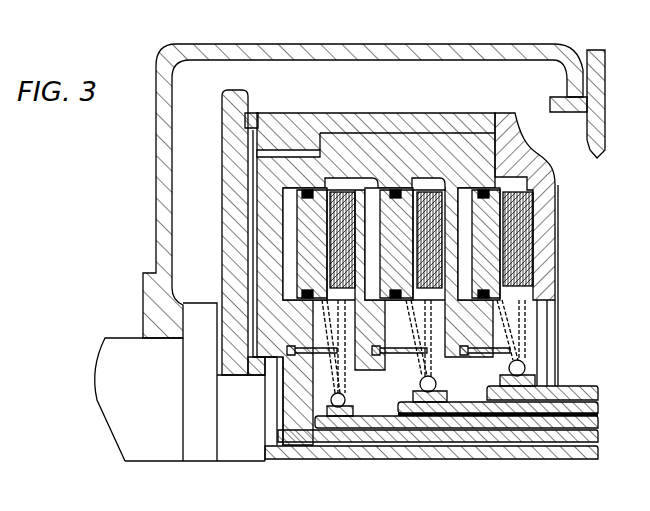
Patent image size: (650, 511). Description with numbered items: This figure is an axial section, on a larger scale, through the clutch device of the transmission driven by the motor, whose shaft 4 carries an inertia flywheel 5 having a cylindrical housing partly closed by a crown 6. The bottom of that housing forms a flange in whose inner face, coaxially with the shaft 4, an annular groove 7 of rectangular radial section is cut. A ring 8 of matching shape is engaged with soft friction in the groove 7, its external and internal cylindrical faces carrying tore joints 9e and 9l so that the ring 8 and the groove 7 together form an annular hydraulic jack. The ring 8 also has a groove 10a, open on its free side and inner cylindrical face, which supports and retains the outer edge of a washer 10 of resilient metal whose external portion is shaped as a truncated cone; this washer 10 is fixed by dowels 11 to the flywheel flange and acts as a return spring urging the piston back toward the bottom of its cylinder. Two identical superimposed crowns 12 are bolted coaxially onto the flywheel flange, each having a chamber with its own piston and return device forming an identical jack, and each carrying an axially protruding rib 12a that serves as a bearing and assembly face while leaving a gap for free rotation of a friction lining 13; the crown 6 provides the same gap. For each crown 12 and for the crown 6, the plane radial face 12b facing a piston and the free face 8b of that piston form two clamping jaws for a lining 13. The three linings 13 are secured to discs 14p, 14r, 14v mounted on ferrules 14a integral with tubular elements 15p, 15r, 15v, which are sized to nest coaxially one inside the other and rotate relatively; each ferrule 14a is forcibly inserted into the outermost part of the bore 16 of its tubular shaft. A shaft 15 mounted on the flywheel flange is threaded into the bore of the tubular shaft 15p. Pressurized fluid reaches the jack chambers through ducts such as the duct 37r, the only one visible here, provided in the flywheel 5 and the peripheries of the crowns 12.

The housing E is at (370, 39).
The shaft 4 is at (112, 410).
The inertia flywheel 5 is at (236, 120).
The duct 37r is at (253, 172).
The crown 12 is at (432, 148).
The protruding rib 12a is at (331, 178).
The radial face 12b is at (367, 236).
The free face 8b is at (374, 140).
The ring 8 is at (391, 244).
The crown 6 is at (556, 184).
The annular groove 7 is at (292, 233).
The tore joint 9e is at (305, 191).
The tore joint 9l is at (314, 296).
The friction lining 13 is at (522, 242).
The disc 14p is at (346, 320).
The disc 14r is at (437, 323).
The disc 14v is at (527, 322).
The ferrule 14a is at (372, 440).
The washer 10 is at (549, 346).
The groove 10a is at (538, 300).
The dowel 11 is at (386, 354).
The shaft 15 is at (284, 452).
The tubular element 15p is at (384, 416).
The tubular element 15r is at (460, 411).
The tubular element 15v is at (580, 392).
The bore 16 is at (338, 446).